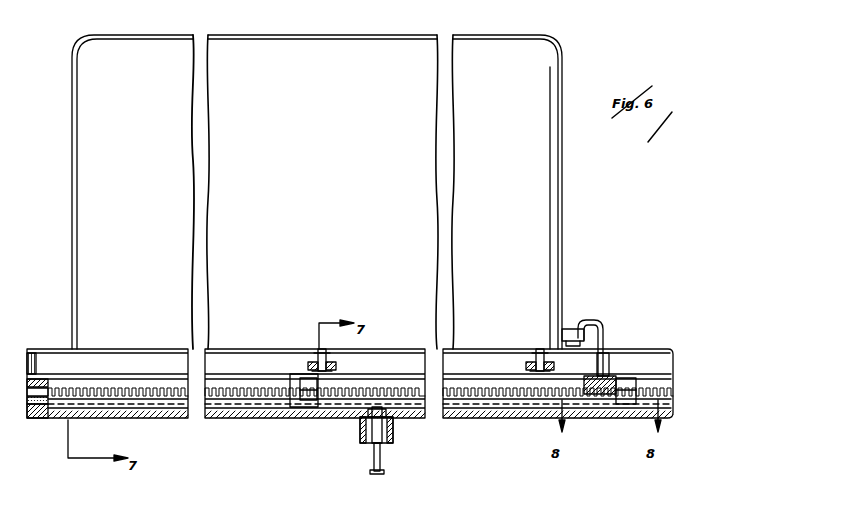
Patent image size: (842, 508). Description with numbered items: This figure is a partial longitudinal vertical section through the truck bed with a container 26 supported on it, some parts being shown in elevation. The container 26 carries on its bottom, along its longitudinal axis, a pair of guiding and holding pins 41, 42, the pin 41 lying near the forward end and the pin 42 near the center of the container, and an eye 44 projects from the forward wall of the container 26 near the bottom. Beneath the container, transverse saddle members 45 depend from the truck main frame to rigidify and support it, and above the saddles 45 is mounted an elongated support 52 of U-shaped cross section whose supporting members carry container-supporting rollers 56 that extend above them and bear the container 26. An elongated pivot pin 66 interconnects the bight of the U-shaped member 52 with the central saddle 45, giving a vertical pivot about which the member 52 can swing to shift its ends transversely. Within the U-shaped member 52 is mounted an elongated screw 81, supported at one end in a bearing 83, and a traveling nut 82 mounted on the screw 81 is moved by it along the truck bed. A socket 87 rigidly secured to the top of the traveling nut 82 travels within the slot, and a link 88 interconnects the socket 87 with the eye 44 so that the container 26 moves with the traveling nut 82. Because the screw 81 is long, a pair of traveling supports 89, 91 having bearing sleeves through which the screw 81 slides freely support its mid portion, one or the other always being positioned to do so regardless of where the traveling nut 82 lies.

The container 26 is at (549, 200).
The container-supporting rollers 56 is at (52, 338).
The elongated screw 81 is at (128, 398).
The bearing 83 is at (36, 411).
The elongated support 52 is at (236, 418).
The socket 87 is at (612, 354).
The guiding and holding pin 42 is at (330, 360).
The guiding and holding pin 41 is at (532, 354).
The traveling support 89 is at (305, 398).
The transverse saddle member 45 is at (394, 433).
The pivot pin 66 is at (373, 453).
The eye 44 is at (574, 329).
The link 88 is at (604, 324).
The traveling nut 82 is at (607, 398).
The traveling support 91 is at (662, 372).